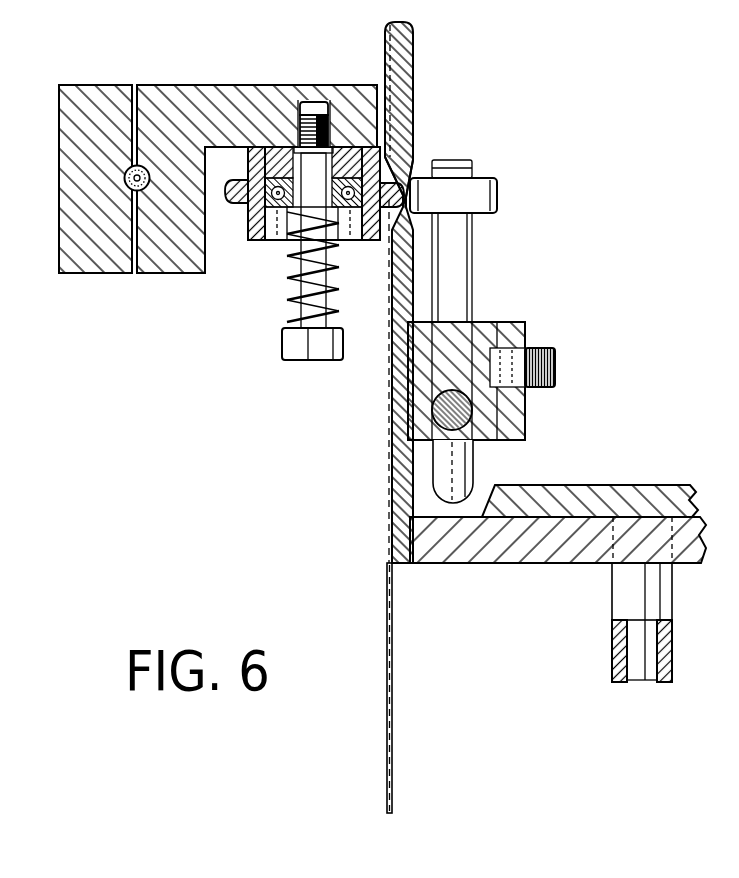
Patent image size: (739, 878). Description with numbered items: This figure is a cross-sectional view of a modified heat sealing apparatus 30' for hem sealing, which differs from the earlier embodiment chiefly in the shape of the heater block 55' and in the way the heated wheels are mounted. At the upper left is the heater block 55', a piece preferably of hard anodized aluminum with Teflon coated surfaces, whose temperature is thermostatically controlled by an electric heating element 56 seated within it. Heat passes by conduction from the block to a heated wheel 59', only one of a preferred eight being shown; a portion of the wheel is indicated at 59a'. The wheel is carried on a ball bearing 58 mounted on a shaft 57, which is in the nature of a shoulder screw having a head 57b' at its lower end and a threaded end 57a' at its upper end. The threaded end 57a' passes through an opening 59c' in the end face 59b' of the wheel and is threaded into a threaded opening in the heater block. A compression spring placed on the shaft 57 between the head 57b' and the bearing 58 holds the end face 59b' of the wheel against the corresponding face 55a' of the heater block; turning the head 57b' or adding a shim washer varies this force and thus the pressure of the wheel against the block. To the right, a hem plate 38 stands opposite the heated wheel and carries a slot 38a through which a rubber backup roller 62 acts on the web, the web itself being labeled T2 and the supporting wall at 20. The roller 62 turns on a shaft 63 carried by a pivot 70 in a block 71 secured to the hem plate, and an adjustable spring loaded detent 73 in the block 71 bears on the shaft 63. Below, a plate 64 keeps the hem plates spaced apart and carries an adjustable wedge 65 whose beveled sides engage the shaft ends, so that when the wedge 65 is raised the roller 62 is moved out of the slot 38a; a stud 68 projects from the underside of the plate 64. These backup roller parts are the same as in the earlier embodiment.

The heater block 55' is at (218, 141).
The heat sealing apparatus 30' is at (267, 27).
The electric heating element 56 is at (122, 186).
The ball bearing 58 is at (278, 185).
The heated wheel 59' is at (317, 230).
The heated wheel portion 59a' is at (244, 239).
The end face of the heated wheel 59b' is at (295, 125).
The opening in end face 59c' is at (314, 89).
The face of the heated block 55a' is at (289, 96).
The threaded end of shaft 57a' is at (348, 104).
The shaft 57 is at (288, 290).
The head of shaft 57b' is at (295, 368).
The hem plate 38 is at (386, 45).
The slot 38a is at (416, 175).
The thread T2 is at (414, 54).
The plate 20 is at (393, 673).
The backup roller 62 is at (497, 197).
The shaft 63 is at (466, 257).
The block 71 is at (487, 413).
The spring loaded detent 73 is at (543, 349).
The pivot 70 is at (467, 402).
The adjustable wedge 65 is at (602, 485).
The plate 64 is at (537, 553).
The stud 68 is at (663, 588).